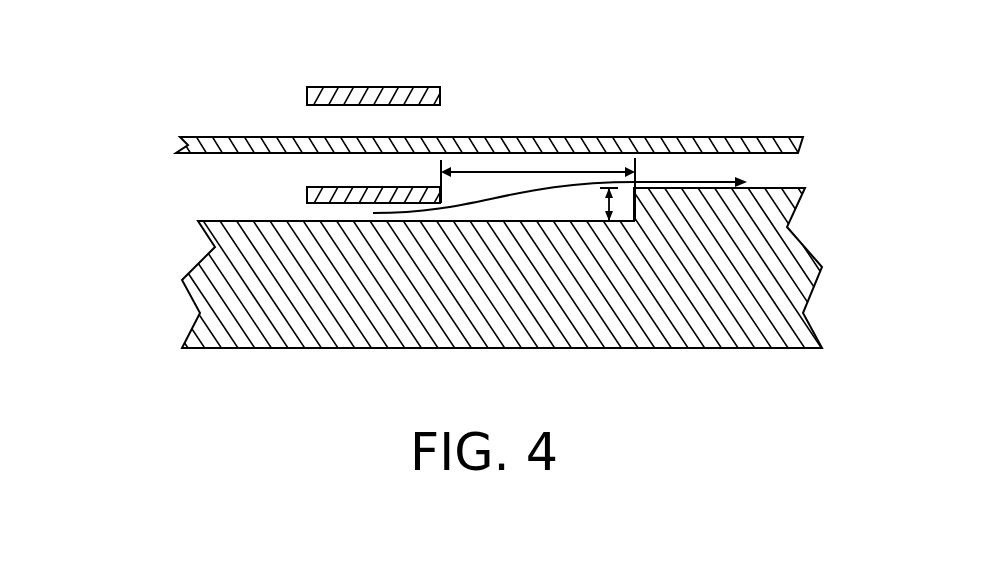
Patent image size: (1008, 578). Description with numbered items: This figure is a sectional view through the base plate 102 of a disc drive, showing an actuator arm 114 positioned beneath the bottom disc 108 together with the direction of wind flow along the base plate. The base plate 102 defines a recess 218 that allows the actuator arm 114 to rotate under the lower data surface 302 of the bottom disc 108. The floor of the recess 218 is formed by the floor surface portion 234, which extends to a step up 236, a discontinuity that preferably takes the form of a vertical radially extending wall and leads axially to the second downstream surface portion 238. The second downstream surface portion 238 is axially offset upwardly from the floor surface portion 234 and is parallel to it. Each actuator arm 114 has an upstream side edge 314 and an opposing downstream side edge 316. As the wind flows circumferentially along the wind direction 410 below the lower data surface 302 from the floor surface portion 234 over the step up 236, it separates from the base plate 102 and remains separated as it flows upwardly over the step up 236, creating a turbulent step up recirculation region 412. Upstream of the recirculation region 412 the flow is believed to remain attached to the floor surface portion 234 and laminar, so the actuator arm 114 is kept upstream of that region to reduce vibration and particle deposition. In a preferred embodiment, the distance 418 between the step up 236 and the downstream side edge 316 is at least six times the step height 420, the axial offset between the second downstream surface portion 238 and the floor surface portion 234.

The base plate 102 is at (562, 323).
The bottom disc 108 is at (322, 147).
The actuator arm 114 is at (393, 95).
The recess 218 is at (158, 133).
The floor surface portion 234 is at (217, 222).
The step up 236 is at (638, 207).
The second downstream surface portion 238 is at (785, 188).
The lower data surface 302 is at (193, 156).
The upstream side edge 314 is at (307, 96).
The downstream side edge 316 is at (441, 97).
The wind direction 410 is at (713, 181).
The step up recirculation region 412 is at (587, 188).
The distance 418 is at (555, 170).
The step height 420 is at (603, 203).